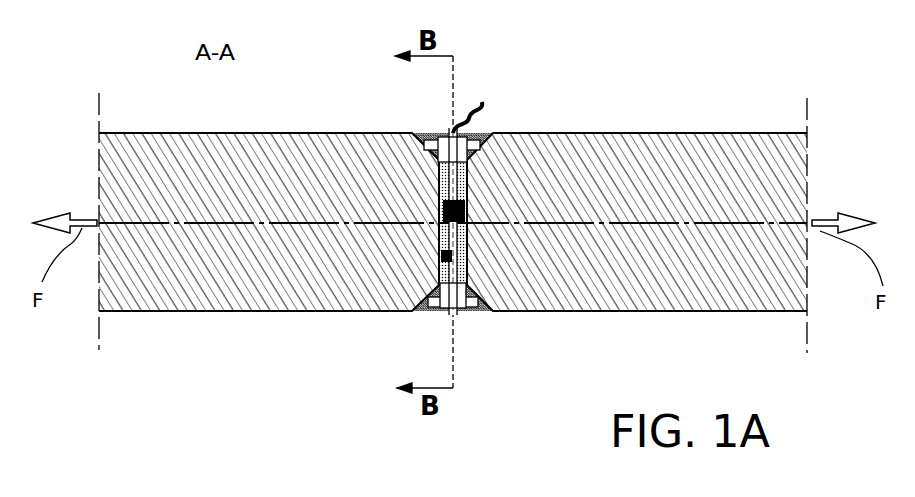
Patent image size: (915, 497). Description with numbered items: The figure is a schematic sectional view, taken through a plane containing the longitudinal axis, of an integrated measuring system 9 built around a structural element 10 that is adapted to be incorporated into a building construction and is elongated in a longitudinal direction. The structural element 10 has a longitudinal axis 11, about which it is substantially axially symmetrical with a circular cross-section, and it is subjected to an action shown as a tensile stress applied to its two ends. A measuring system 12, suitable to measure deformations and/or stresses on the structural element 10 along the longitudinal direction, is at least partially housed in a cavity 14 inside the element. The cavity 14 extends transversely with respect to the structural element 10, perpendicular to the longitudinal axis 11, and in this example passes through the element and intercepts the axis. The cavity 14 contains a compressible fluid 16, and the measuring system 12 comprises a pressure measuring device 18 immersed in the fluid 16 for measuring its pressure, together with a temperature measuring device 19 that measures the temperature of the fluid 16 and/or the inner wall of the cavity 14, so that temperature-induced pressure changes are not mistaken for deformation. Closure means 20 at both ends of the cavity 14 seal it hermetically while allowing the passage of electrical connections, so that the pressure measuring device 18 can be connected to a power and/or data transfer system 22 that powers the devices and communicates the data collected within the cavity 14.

The integrated measuring system 9 is at (685, 110).
The structural element 10 is at (235, 312).
The longitudinal axis 11 is at (206, 228).
The measuring system 12 is at (485, 162).
The cavity 14 is at (470, 256).
The compressible fluid 16 is at (468, 182).
The pressure measuring device 18 is at (441, 213).
The temperature measuring device 19 is at (441, 256).
The closure means 20 is at (437, 132).
The power and/or data transfer system 22 is at (468, 112).